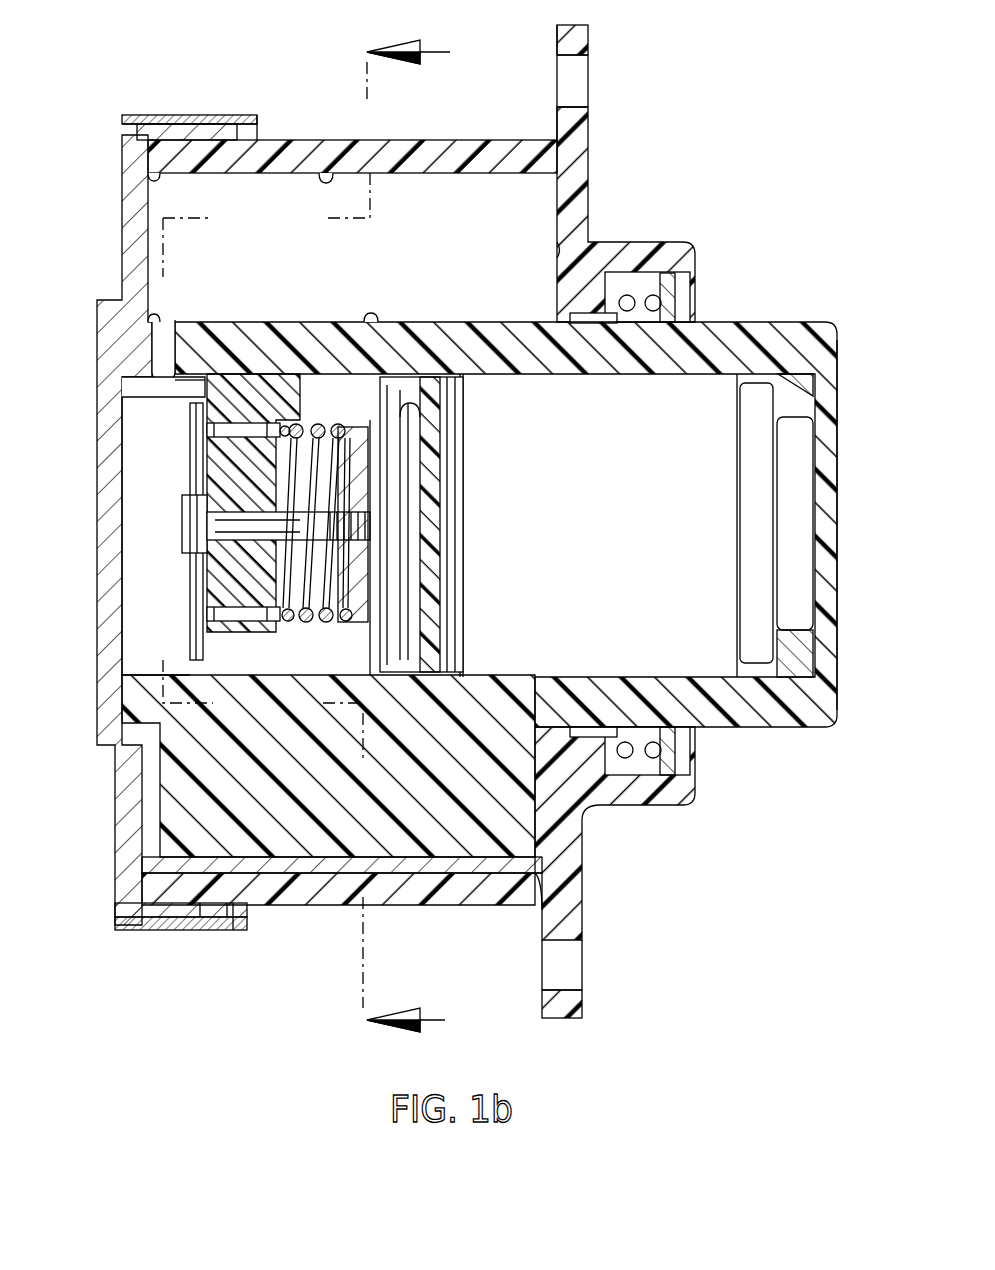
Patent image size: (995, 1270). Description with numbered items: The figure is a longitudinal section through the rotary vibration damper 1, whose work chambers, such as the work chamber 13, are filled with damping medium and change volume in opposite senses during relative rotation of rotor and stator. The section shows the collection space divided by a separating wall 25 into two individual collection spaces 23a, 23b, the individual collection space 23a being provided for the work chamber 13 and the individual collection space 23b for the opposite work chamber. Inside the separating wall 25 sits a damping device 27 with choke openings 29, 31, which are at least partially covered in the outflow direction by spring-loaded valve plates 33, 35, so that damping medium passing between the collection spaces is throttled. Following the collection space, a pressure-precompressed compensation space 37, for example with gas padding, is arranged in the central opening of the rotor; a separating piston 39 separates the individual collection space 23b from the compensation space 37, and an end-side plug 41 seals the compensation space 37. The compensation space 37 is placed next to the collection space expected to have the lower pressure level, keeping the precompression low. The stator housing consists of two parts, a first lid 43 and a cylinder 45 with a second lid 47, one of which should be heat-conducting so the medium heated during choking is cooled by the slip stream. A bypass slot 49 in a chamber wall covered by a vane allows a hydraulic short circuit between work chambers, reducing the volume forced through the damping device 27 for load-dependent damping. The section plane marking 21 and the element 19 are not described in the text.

The rotary vibration damper 1 is at (231, 973).
The work chamber 13 is at (253, 186).
The seal ring 19 is at (150, 349).
The section plane 21 is at (316, 350).
The individual collection space 23a is at (130, 610).
The individual collection space 23b is at (367, 640).
The separating wall 25 is at (205, 386).
The damping device 27 is at (180, 572).
The choke opening 29 is at (262, 640).
The choke opening 31 is at (242, 418).
The valve plate 33 is at (192, 418).
The valve plate 35 is at (272, 428).
The compensation space 37 is at (680, 392).
The separating piston 39 is at (440, 421).
The end-side plug 41 is at (830, 447).
The first lid 43 is at (126, 221).
The cylinder 45 is at (310, 146).
The second lid 47 is at (578, 207).
The bypass slot 49 is at (154, 176).